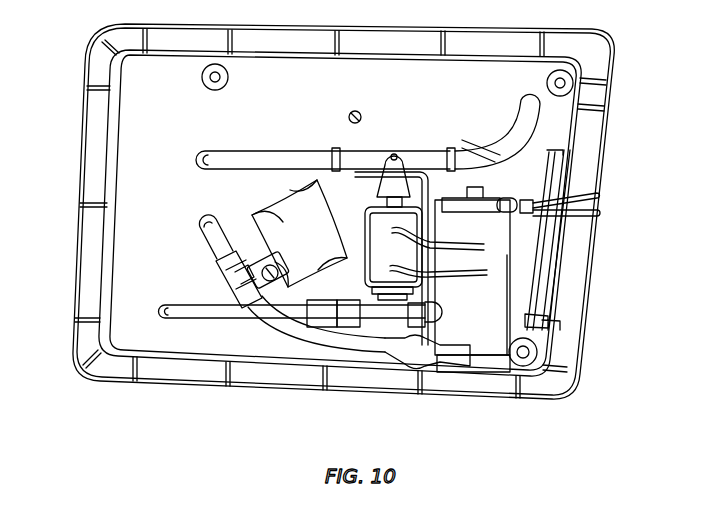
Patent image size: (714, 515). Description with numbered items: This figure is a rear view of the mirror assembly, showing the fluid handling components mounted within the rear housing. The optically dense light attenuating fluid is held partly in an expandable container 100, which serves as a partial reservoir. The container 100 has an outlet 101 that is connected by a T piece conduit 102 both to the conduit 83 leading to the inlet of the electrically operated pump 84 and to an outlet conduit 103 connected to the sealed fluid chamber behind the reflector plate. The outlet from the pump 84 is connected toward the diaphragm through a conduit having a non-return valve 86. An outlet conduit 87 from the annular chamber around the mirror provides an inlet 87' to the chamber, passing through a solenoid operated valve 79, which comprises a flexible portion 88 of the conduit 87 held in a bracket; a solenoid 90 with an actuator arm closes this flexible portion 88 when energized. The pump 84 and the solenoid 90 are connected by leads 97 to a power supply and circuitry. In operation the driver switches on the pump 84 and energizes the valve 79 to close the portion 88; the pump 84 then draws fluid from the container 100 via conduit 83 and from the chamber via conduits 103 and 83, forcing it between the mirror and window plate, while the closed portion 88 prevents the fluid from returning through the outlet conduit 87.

The solenoid operated valve 79 is at (372, 126).
The flexible portion of the conduit 88 is at (428, 164).
The inlet to the chamber 87' is at (247, 240).
The outlet conduit 87 is at (544, 131).
The leads 97 is at (596, 215).
The expandable container 100 is at (248, 196).
The outlet conduit 103 is at (205, 237).
The outlet 101 is at (216, 268).
The T piece conduit 102 is at (233, 280).
The non-return valve 86 is at (320, 318).
The outlet conduit 83 is at (378, 352).
The solenoid 90 is at (407, 343).
The electrically operated pump 84 is at (477, 348).